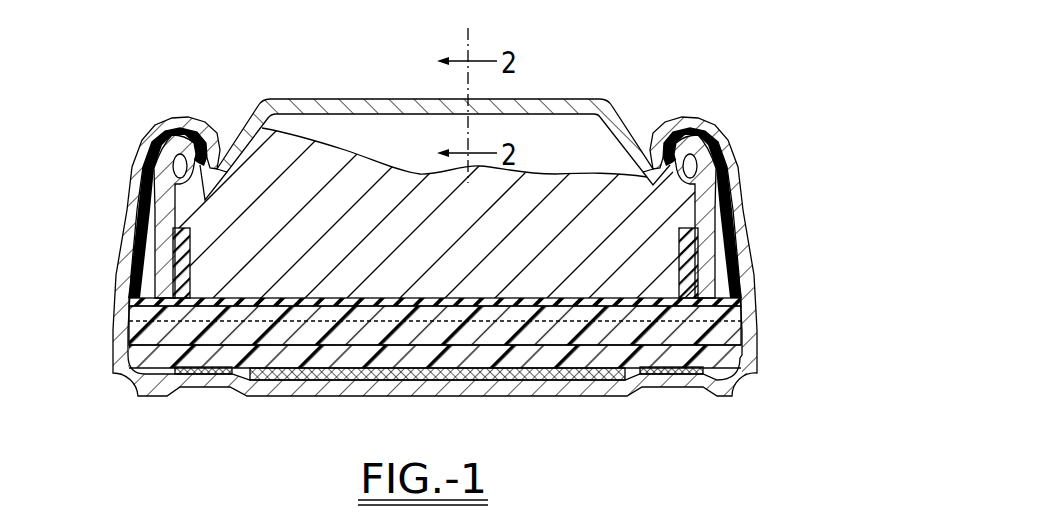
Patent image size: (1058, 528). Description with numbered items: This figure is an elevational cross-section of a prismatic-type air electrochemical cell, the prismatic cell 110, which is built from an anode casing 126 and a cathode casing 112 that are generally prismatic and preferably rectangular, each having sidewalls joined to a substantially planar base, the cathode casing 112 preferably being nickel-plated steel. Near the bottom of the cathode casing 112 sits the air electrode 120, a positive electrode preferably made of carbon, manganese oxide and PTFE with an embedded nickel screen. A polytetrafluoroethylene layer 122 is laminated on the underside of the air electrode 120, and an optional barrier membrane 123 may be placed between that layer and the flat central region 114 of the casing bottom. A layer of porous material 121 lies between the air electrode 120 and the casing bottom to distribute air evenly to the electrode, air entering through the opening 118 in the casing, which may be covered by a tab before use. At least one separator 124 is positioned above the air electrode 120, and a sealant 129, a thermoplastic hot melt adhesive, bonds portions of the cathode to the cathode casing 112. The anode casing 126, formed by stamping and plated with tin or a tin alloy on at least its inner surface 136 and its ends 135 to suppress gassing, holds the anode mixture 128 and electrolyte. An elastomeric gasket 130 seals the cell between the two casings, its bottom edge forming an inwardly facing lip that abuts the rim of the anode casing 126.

The prismatic cell 110 is at (251, 80).
The cathode casing 112 is at (126, 148).
The flat central region 114 is at (287, 383).
The opening 118 is at (342, 392).
The air electrode 120 is at (737, 325).
The layer of porous material 121 is at (572, 390).
The polytetrafluoroethylene layer 122 is at (737, 343).
The barrier membrane 123 is at (733, 358).
The separator 124 is at (447, 300).
The anode casing 126 is at (358, 97).
The anode mixture 128 is at (410, 176).
The sealant 129 is at (192, 380).
The gasket 130 is at (733, 213).
The ends 135 is at (172, 277).
The inner surface 136 is at (650, 186).